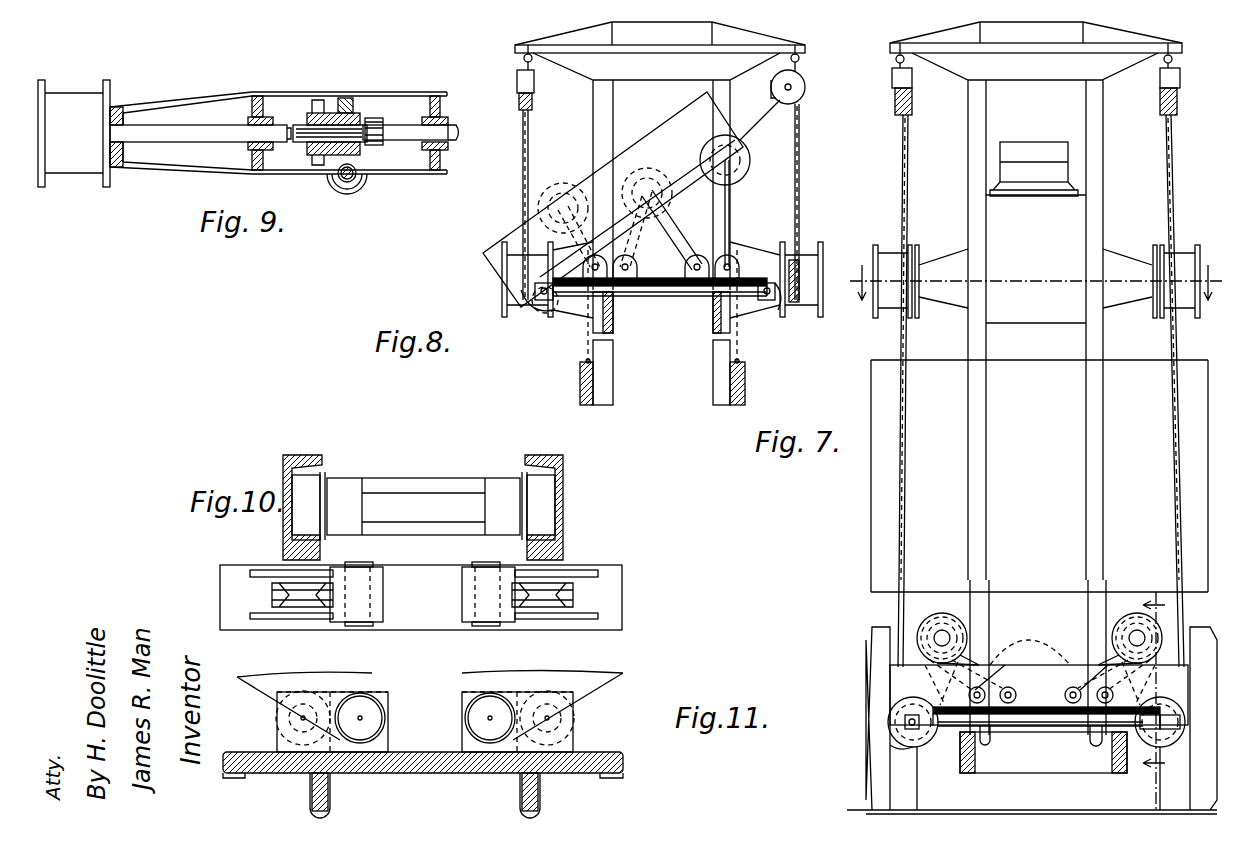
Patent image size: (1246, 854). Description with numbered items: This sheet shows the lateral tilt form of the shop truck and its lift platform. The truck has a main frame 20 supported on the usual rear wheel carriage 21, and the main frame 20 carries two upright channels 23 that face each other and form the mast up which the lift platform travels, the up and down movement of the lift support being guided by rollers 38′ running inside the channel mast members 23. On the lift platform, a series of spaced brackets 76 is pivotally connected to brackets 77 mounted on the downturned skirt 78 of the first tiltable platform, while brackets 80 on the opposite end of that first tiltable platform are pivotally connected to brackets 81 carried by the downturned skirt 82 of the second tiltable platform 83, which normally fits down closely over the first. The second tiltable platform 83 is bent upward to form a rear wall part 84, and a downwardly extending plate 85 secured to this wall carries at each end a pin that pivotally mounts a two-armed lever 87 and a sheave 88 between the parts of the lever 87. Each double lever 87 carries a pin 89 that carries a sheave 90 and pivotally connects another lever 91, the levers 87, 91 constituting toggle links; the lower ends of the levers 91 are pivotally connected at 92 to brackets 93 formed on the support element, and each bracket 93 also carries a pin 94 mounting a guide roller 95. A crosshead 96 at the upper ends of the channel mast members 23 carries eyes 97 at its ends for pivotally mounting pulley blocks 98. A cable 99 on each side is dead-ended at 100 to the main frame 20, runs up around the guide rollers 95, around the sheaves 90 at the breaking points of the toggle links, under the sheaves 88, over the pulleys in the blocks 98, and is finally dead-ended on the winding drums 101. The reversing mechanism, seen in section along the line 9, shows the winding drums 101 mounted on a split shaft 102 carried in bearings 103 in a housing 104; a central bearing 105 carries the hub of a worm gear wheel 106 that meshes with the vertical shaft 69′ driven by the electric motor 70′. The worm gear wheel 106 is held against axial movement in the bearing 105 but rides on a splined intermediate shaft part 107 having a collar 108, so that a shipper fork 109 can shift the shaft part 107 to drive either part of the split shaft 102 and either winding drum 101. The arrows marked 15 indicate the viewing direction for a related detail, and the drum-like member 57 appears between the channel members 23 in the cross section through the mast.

In FIG. 7, the section line 9 is at (1036, 272).
In FIG. 11, the section line 15 is at (1165, 605).
In FIG. 8, the main frame 20 is at (580, 388).
In FIG. 11, the main frame 20 is at (965, 760).
In FIG. 11, the rear wheel carriage 21 is at (880, 757).
In FIG. 8, the upright channels 23 is at (713, 368).
In FIG. 7, the upright channels 23 is at (1093, 398).
In FIG. 10, the upright channels 23 is at (283, 463).
In FIG. 10, the rollers 38′ is at (545, 490).
In FIG. 10, the drum / base plate 57 is at (500, 548).
In FIG. 9, the vertical shaft 69′ is at (350, 190).
In FIG. 7, the electric motor 70′ is at (1050, 152).
In FIG. 8, the brackets 76 is at (768, 300).
In FIG. 11, the brackets 76 is at (1110, 738).
In FIG. 8, the brackets 77 is at (776, 306).
In FIG. 11, the brackets 77 is at (1143, 740).
In FIG. 8, the downturned skirt 78 is at (752, 147).
In FIG. 11, the downturned skirt 78 is at (1155, 745).
In FIG. 8, the brackets 80 is at (552, 318).
In FIG. 11, the brackets 80 is at (905, 736).
In FIG. 8, the brackets 81 is at (545, 318).
In FIG. 11, the brackets 81 is at (890, 724).
In FIG. 8, the downturned skirt 82 is at (540, 307).
In FIG. 11, the downturned skirt 82 is at (905, 716).
In FIG. 11, the second tiltable platform 83 is at (905, 706).
In FIG. 11, the rear wall part 84 is at (890, 677).
In FIG. 8, the plate 85 is at (690, 165).
In FIG. 11, the plate 85 is at (905, 748).
In FIG. 8, the two-armed lever 87 is at (540, 222).
In FIG. 11, the two-armed lever 87 is at (925, 680).
In FIG. 8, the sheave 88 is at (748, 160).
In FIG. 11, the pin 89 is at (915, 622).
In FIG. 8, the sheave 90 is at (548, 190).
In FIG. 11, the sheave 90 is at (928, 632).
In FIG. 8, the lever 91 is at (610, 262).
In FIG. 11, the lever 91 is at (1100, 650).
In FIG. 10, the lever 91 is at (262, 577).
In FIG. 11, the pivotal connection 92 is at (1065, 690).
In FIG. 10, the pivotal connection 92 is at (490, 565).
In FIG. 10, the brackets 93 is at (470, 596).
In FIG. 10, the pin 94 is at (295, 575).
In FIG. 8, the guide roller 95 is at (745, 265).
In FIG. 11, the guide roller 95 is at (1080, 665).
In FIG. 10, the guide roller 95 is at (283, 596).
In FIG. 8, the crosshead 96 is at (652, 33).
In FIG. 7, the crosshead 96 is at (1043, 38).
In FIG. 8, the eyes 97 is at (532, 66).
In FIG. 7, the eyes 97 is at (905, 62).
In FIG. 8, the pulley blocks 98 is at (538, 88).
In FIG. 7, the pulley blocks 98 is at (910, 88).
In FIG. 8, the cable 99 is at (530, 140).
In FIG. 7, the cable 99 is at (912, 140).
In FIG. 8, the dead end 100 is at (742, 365).
In FIG. 11, the dead end 100 is at (990, 740).
In FIG. 9, the winding drums 101 is at (88, 165).
In FIG. 8, the winding drums 101 is at (515, 290).
In FIG. 7, the winding drums 101 is at (917, 248).
In FIG. 9, the split shaft 102 is at (172, 142).
In FIG. 9, the bearings 103 is at (260, 115).
In FIG. 9, the housing 104 is at (250, 92).
In FIG. 8, the housing 104 is at (752, 248).
In FIG. 7, the housing 104 is at (1110, 265).
In FIG. 9, the central bearing 105 is at (318, 113).
In FIG. 9, the worm gear wheel 106 is at (346, 100).
In FIG. 9, the splined intermediate shaft part 107 is at (370, 125).
In FIG. 9, the collar 108 is at (382, 145).
In FIG. 9, the shipper fork 109 is at (375, 142).